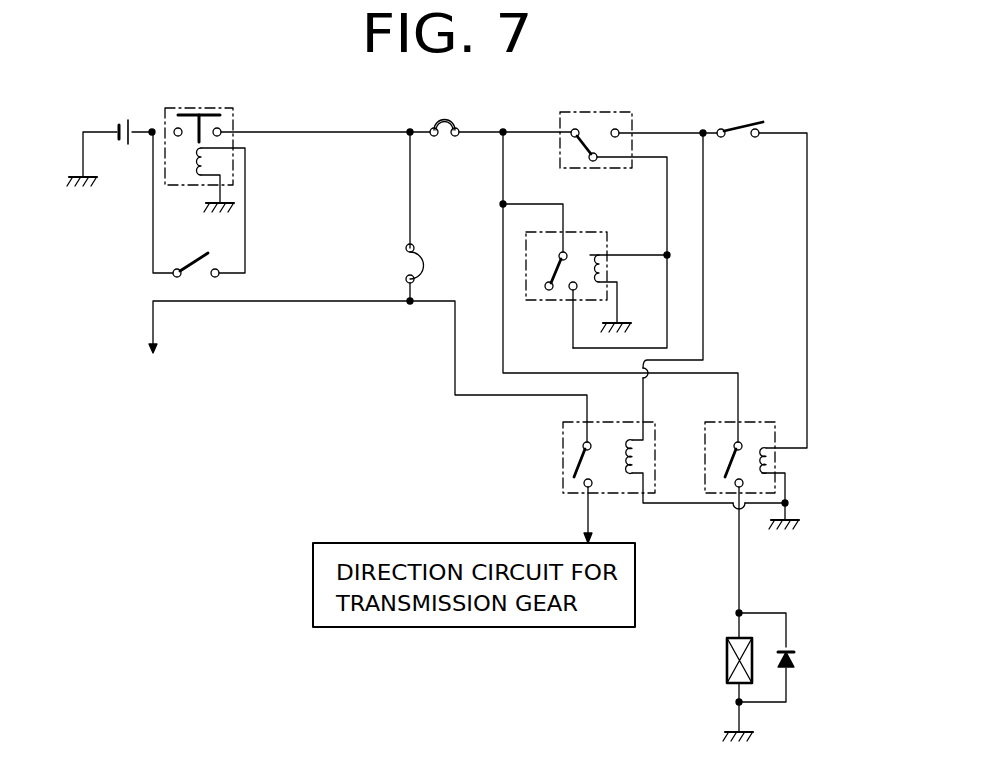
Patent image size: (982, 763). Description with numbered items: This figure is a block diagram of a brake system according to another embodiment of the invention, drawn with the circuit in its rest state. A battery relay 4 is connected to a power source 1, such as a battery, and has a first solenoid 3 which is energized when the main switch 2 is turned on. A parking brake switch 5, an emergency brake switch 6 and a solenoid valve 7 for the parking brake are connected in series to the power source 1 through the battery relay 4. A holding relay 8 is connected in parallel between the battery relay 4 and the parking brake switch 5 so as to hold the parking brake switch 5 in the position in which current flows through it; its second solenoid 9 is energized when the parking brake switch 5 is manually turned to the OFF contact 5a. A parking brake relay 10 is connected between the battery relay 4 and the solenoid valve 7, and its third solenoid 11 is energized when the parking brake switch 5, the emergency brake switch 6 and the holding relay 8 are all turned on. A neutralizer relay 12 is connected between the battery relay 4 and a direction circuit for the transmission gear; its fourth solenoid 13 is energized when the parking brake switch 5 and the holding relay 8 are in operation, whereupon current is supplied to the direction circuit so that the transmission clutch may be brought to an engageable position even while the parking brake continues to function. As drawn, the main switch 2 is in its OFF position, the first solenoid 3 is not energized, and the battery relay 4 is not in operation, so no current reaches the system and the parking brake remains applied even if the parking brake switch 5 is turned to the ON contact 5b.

The power source 1 is at (121, 113).
The main switch 2 is at (188, 279).
The first solenoid 3 is at (196, 178).
The battery relay 4 is at (198, 104).
The parking brake switch 5 is at (602, 112).
The OFF contact 5a is at (570, 129).
The ON contact 5b is at (618, 129).
The emergency brake switch 6 is at (745, 122).
The solenoid valve 7 is at (722, 663).
The holding relay 8 is at (553, 304).
The second solenoid 9 is at (594, 268).
The parking brake relay 10 is at (758, 416).
The third solenoid 11 is at (776, 460).
The neutralizer relay 12 is at (558, 456).
The fourth solenoid 13 is at (629, 476).